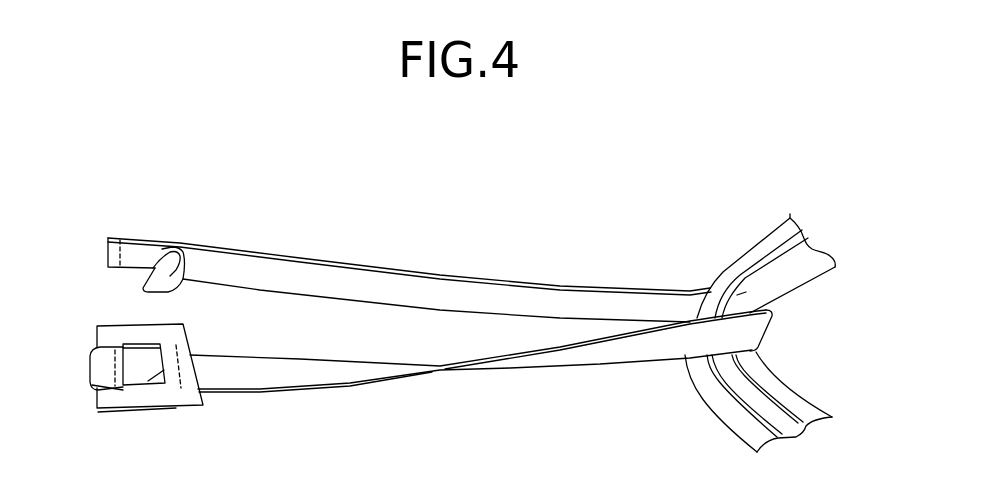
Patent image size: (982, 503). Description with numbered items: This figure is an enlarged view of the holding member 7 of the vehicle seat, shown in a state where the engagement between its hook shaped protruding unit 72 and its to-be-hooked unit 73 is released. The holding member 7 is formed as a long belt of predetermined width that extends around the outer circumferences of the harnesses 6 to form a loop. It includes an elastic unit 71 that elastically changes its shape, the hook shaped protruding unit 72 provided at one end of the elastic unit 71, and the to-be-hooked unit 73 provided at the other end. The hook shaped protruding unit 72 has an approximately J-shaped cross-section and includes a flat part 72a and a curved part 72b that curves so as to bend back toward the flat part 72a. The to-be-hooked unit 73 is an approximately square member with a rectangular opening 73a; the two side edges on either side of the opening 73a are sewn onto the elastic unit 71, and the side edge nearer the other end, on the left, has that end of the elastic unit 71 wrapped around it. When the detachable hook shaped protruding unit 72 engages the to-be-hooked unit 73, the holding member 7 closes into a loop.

The harnesses 6 is at (813, 272).
The holding member 7 is at (481, 192).
The elastic unit 71 is at (407, 272).
The hook shaped protruding unit 72 is at (108, 252).
The flat part 72a is at (128, 250).
The curved part 72b is at (156, 266).
The to-be-hooked unit 73 is at (203, 406).
The opening 73a is at (148, 381).